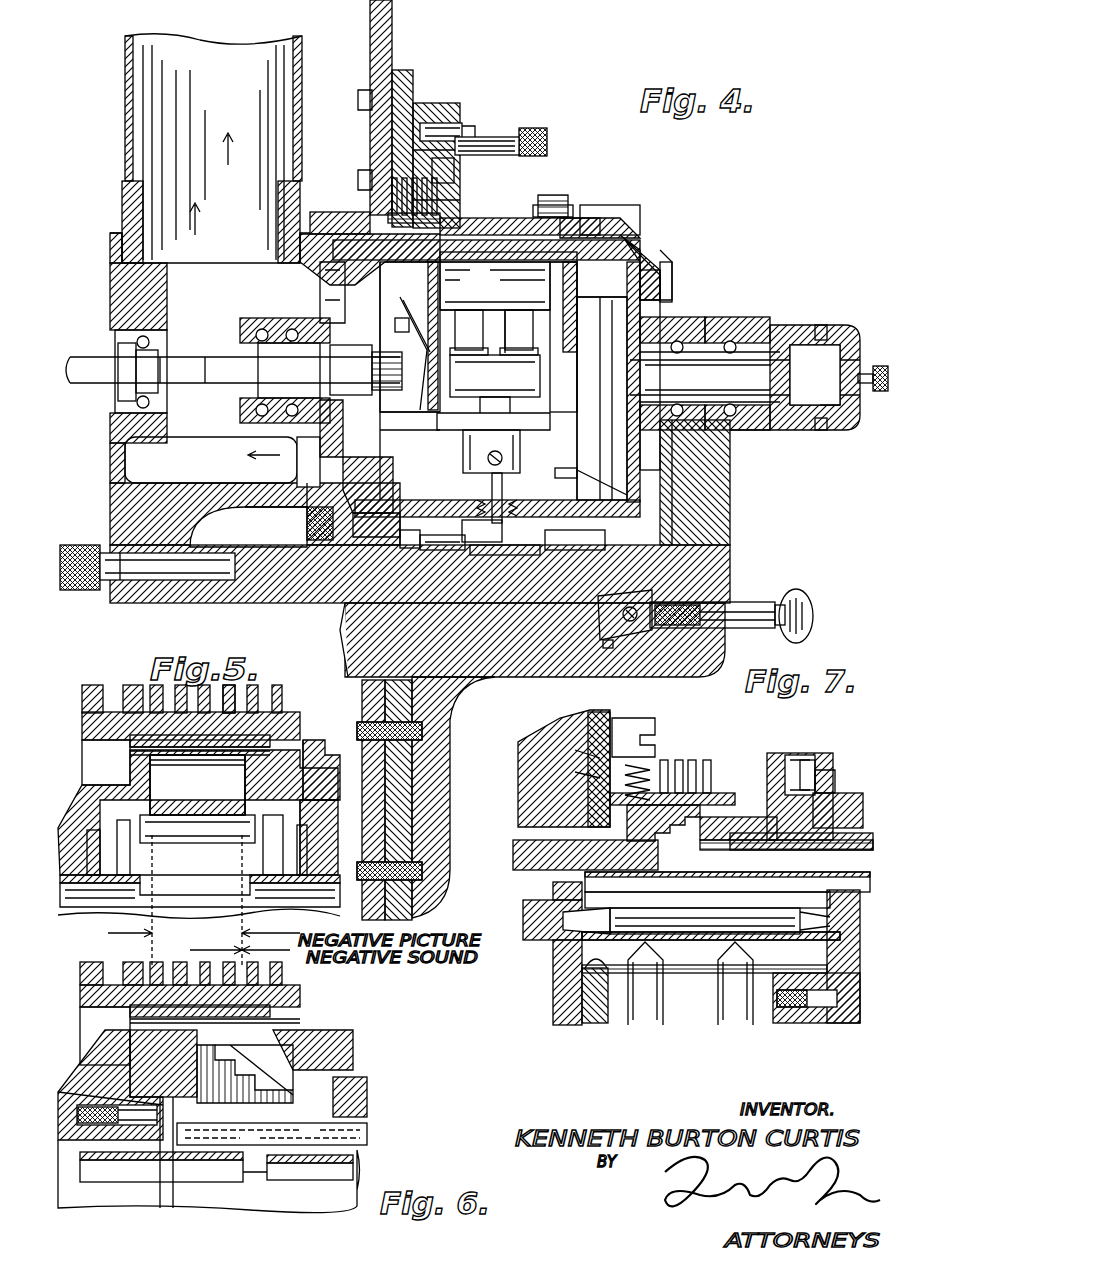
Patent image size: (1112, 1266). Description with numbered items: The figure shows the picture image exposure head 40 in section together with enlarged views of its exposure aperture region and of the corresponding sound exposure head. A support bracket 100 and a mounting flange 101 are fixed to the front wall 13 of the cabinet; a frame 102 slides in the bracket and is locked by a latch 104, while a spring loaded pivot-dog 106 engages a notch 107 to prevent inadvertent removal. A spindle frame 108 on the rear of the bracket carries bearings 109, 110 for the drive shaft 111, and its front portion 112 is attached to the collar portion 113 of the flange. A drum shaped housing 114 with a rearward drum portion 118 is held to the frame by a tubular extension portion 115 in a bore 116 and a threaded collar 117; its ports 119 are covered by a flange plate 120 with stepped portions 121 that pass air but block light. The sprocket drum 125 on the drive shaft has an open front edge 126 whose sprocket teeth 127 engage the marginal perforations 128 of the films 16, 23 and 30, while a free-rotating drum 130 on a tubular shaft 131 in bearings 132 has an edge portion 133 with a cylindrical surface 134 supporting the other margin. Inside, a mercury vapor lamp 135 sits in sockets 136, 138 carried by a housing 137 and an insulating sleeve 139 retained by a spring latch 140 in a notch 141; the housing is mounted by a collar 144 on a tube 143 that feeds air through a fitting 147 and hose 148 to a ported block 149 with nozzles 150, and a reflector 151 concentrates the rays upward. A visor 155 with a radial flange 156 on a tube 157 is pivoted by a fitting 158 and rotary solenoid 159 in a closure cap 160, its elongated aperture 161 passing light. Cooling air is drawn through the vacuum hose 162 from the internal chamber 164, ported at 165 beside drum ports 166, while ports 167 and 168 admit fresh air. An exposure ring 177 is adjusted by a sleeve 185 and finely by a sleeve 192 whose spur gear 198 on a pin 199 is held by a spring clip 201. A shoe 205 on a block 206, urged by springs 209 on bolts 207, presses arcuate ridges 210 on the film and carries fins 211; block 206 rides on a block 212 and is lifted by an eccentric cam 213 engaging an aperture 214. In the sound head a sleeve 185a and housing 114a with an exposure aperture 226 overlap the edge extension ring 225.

In FIG. 4, the front wall 13 is at (372, 35).
In FIG. 5, the film web 16 is at (200, 744).
In FIG. 6, the film web 16 is at (215, 1004).
In FIG. 5, the image master film 23 is at (197, 785).
In FIG. 6, the film web 30 is at (240, 1060).
In FIG. 4, the exposure head 40 is at (616, 192).
In FIG. 4, the support bracket 100 is at (435, 766).
In FIG. 4, the mounting flange 101 is at (405, 82).
In FIG. 4, the frame 102 is at (722, 545).
In FIG. 4, the latch 104 is at (793, 598).
In FIG. 4, the pivot-dog 106 is at (615, 636).
In FIG. 4, the notch 107 is at (608, 600).
In FIG. 4, the spindle frame 108 is at (118, 300).
In FIG. 4, the bearing 109 is at (160, 400).
In FIG. 4, the bearing 110 is at (278, 320).
In FIG. 4, the drive shaft 111 is at (195, 352).
In FIG. 4, the front portion 112 is at (318, 514).
In FIG. 4, the collar portion 113 is at (325, 214).
In FIG. 4, the drum shaped housing 114 is at (660, 250).
In FIG. 6, the housing 114a is at (366, 1095).
In FIG. 7, the housing 114a is at (778, 845).
In FIG. 4, the tubular extension portion 115 is at (692, 316).
In FIG. 4, the bore 116 is at (725, 316).
In FIG. 4, the threaded collar 117 is at (762, 318).
In FIG. 4, the cylindrical drum portion 118 is at (592, 222).
In FIG. 5, the cylindrical drum portion 118 is at (326, 740).
In FIG. 4, the ports 119 is at (672, 278).
In FIG. 4, the flange plate 120 is at (683, 242).
In FIG. 4, the stepped portions 121 is at (692, 482).
In FIG. 4, the drum 125 is at (400, 490).
In FIG. 5, the drum 125 is at (76, 790).
In FIG. 6, the drum 125 is at (77, 1066).
In FIG. 7, the drum 125 is at (514, 837).
In FIG. 4, the open front edge 126 is at (462, 530).
In FIG. 5, the open front edge 126 is at (173, 785).
In FIG. 6, the open front edge 126 is at (180, 1075).
In FIG. 5, the sprocket teeth 127 is at (120, 940).
In FIG. 7, the sprocket teeth 127 is at (572, 771).
In FIG. 5, the marginal perforations 128 is at (197, 769).
In FIG. 6, the marginal perforations 128 is at (105, 1036).
In FIG. 4, the drum 130 is at (580, 455).
In FIG. 5, the drum 130 is at (330, 835).
In FIG. 4, the tubular shaft 131 is at (612, 380).
In FIG. 4, the bearings 132 is at (748, 432).
In FIG. 4, the open edge portion 133 is at (492, 555).
In FIG. 5, the open edge portion 133 is at (197, 829).
In FIG. 5, the cylindrical outer surface 134 is at (235, 760).
In FIG. 4, the mercury vapor lamp 135 is at (560, 318).
In FIG. 7, the mercury vapor lamp 135 is at (705, 913).
In FIG. 7, the electrical socket 136 is at (858, 935).
In FIG. 4, the housing 137 is at (418, 336).
In FIG. 7, the housing 137 is at (558, 1000).
In FIG. 7, the electrical socket 138 is at (525, 912).
In FIG. 4, the insulating sleeve 139 is at (508, 281).
In FIG. 7, the insulating sleeve 139 is at (550, 890).
In FIG. 4, the spring latch 140 is at (415, 352).
In FIG. 4, the notch 141 is at (398, 326).
In FIG. 4, the tube 143 is at (485, 478).
In FIG. 4, the collar 144 is at (465, 447).
In FIG. 4, the fitting 147 is at (450, 556).
In FIG. 4, the flexible hose 148 is at (415, 560).
In FIG. 4, the ported block 149 is at (510, 380).
In FIG. 4, the nozzles 150 is at (508, 330).
In FIG. 7, the nozzles 150 is at (720, 1015).
In FIG. 4, the reflector 151 is at (505, 300).
In FIG. 7, the reflector 151 is at (704, 982).
In FIG. 5, the visor 155 is at (250, 865).
In FIG. 6, the visor 155 is at (340, 1172).
In FIG. 7, the visor 155 is at (648, 880).
In FIG. 4, the radial flange 156 is at (605, 355).
In FIG. 4, the tube 157 is at (612, 400).
In FIG. 4, the fitting 158 is at (800, 342).
In FIG. 4, the rotary solenoid mechanism 159 is at (830, 422).
In FIG. 4, the closure cap 160 is at (848, 338).
In FIG. 4, the elongated aperture 161 is at (510, 310).
In FIG. 5, the elongated aperture 161 is at (215, 888).
In FIG. 6, the elongated aperture 161 is at (240, 1186).
In FIG. 7, the elongated aperture 161 is at (700, 880).
In FIG. 4, the vacuum hose 162 is at (138, 135).
In FIG. 4, the internal chamber 164 is at (218, 443).
In FIG. 4, the port 165 is at (292, 262).
In FIG. 4, the ports 166 is at (396, 330).
In FIG. 4, the ports 167 is at (560, 470).
In FIG. 4, the ports 168 is at (840, 314).
In FIG. 4, the exposure ring 177 is at (500, 300).
In FIG. 5, the exposure ring 177 is at (140, 840).
In FIG. 4, the sleeve 185 is at (622, 235).
In FIG. 5, the sleeve 185 is at (306, 740).
In FIG. 6, the sleeve 185a is at (342, 1030).
In FIG. 7, the sleeve 185a is at (745, 815).
In FIG. 4, the sleeve 192 is at (535, 560).
In FIG. 7, the sleeve 192 is at (850, 795).
In FIG. 4, the spur gear 198 is at (556, 193).
In FIG. 7, the spur gear 198 is at (790, 753).
In FIG. 7, the pin 199 is at (832, 772).
In FIG. 7, the spring clip 201 is at (822, 752).
In FIG. 4, the shoe 205 is at (526, 205).
In FIG. 5, the shoe 205 is at (118, 682).
In FIG. 6, the shoe 205 is at (311, 1002).
In FIG. 7, the shoe 205 is at (672, 738).
In FIG. 4, the block 206 is at (460, 122).
In FIG. 7, the block 206 is at (570, 730).
In FIG. 4, the bolts 207 is at (475, 160).
In FIG. 7, the bolts 207 is at (622, 722).
In FIG. 4, the springs 209 is at (436, 188).
In FIG. 7, the springs 209 is at (572, 751).
In FIG. 5, the arcuate ridges 210 is at (85, 716).
In FIG. 6, the arcuate ridges 210 is at (298, 1010).
In FIG. 7, the arcuate ridges 210 is at (600, 797).
In FIG. 4, the fins 211 is at (500, 196).
In FIG. 5, the fins 211 is at (245, 690).
In FIG. 6, the fins 211 is at (275, 972).
In FIG. 7, the fins 211 is at (690, 758).
In FIG. 4, the block 212 is at (430, 104).
In FIG. 7, the block 212 is at (520, 768).
In FIG. 4, the eccentric cam mechanism 213 is at (512, 128).
In FIG. 4, the aperture 214 is at (436, 163).
In FIG. 6, the edge extension ring 225 is at (160, 1125).
In FIG. 7, the edge extension ring 225 is at (667, 835).
In FIG. 6, the exposure aperture 226 is at (352, 1125).
In FIG. 7, the exposure aperture 226 is at (715, 845).